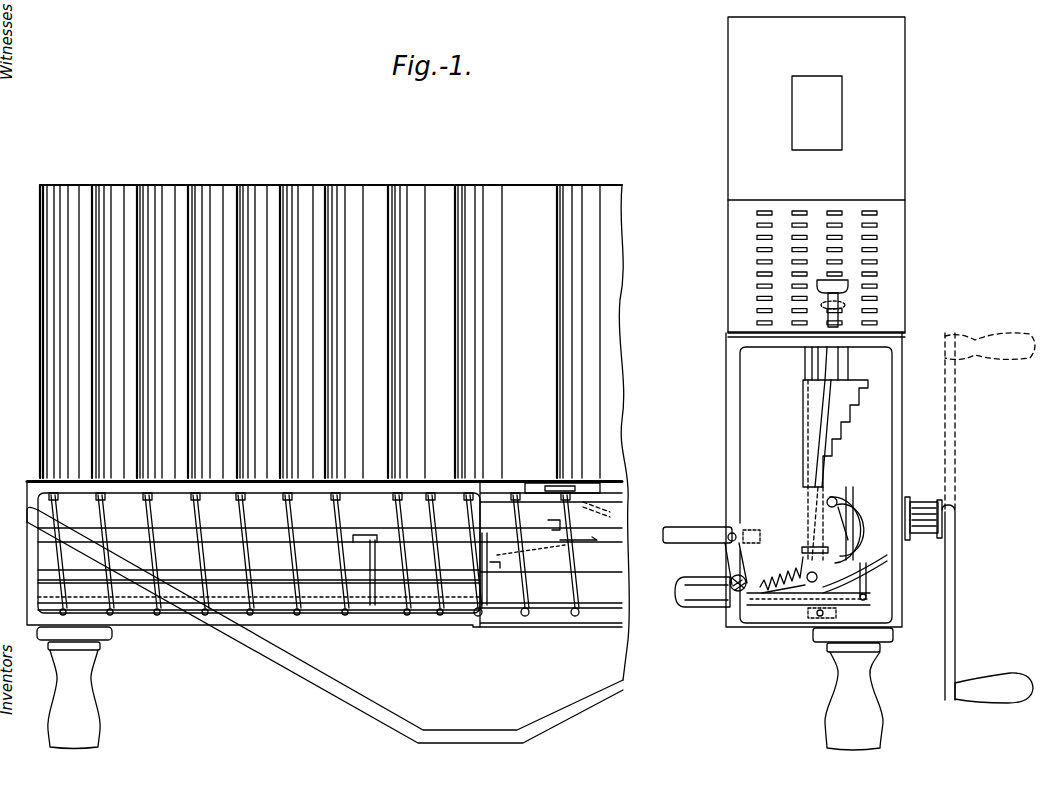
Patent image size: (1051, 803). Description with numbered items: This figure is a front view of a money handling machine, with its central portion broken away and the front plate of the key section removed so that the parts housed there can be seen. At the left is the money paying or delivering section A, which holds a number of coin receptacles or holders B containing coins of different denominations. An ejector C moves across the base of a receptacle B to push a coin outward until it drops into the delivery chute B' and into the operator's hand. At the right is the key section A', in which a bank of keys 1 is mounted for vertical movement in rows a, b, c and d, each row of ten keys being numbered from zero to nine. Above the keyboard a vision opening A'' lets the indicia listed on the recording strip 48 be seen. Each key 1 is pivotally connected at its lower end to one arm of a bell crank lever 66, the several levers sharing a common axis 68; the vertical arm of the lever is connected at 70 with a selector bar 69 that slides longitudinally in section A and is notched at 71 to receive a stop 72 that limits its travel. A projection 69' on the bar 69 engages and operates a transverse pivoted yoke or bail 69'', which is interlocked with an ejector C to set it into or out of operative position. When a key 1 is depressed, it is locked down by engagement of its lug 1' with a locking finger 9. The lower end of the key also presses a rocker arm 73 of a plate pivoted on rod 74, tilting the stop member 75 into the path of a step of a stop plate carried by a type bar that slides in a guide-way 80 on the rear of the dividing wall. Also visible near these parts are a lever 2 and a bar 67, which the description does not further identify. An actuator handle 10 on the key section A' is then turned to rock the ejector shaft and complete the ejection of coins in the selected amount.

The coin receptacle B is at (352, 414).
The delivery chute B' is at (325, 625).
The money paying or delivering section A is at (343, 594).
The key section A' is at (832, 177).
The vision opening A'' is at (863, 141).
The ejector C is at (578, 492).
The recording strip 48 is at (792, 143).
The row of keys a is at (765, 212).
The row of keys b is at (800, 212).
The row of keys c is at (835, 212).
The row of keys d is at (870, 212).
The key 1 is at (872, 303).
The lug 1' is at (801, 453).
The guide-way 80 is at (852, 388).
The locking finger 9 is at (850, 517).
The connection 70 is at (730, 540).
The bell crank lever 66 is at (738, 560).
The lever 2 is at (873, 563).
The stop member 75 is at (873, 577).
The rod 74 is at (870, 600).
The common axis 68 is at (733, 588).
The bar 67 is at (778, 608).
The rocker arm 73 is at (817, 616).
The handle 10 is at (957, 560).
The selector bar 69 is at (608, 521).
The projection 69' is at (538, 486).
The yoke or pivoted bail 69'' is at (523, 597).
The notch 71 is at (352, 548).
The stop 72 is at (371, 545).